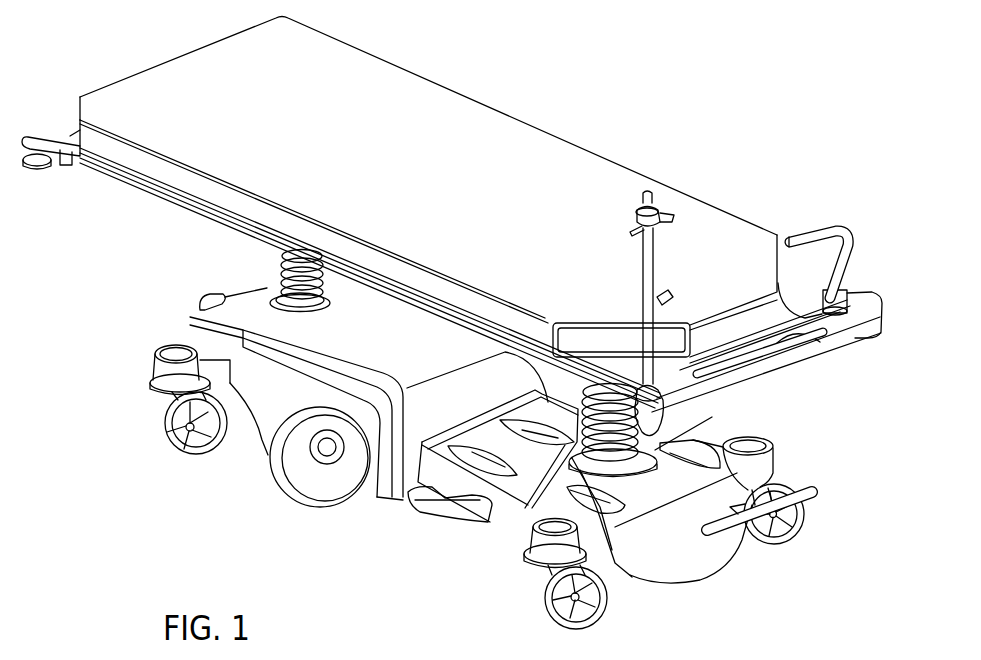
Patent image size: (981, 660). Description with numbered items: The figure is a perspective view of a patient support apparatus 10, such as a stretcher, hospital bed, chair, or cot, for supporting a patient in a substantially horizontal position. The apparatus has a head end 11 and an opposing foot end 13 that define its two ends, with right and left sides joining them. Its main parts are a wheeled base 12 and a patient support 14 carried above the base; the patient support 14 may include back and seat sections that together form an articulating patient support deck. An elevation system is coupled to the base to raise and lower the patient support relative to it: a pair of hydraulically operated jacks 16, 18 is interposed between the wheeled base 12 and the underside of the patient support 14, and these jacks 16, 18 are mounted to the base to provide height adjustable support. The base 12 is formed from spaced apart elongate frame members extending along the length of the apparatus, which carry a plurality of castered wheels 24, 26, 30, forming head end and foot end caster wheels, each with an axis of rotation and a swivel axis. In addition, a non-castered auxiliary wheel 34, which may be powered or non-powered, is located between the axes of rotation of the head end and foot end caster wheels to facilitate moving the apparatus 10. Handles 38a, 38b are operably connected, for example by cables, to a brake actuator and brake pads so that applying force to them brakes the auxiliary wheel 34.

The patient support apparatus 10 is at (455, 321).
The head end 11 is at (743, 322).
The wheeled base 12 is at (287, 327).
The foot end 13 is at (141, 72).
The patient support 14 is at (428, 185).
The hydraulically operated jack 16 is at (277, 258).
The hydraulically operated jack 18 is at (567, 463).
The castered wheel 24 is at (793, 525).
The castered wheel 26 is at (547, 602).
The castered wheel 30 is at (212, 458).
The auxiliary wheel 34 is at (320, 493).
The handle 38a is at (670, 297).
The handle 38b is at (845, 235).